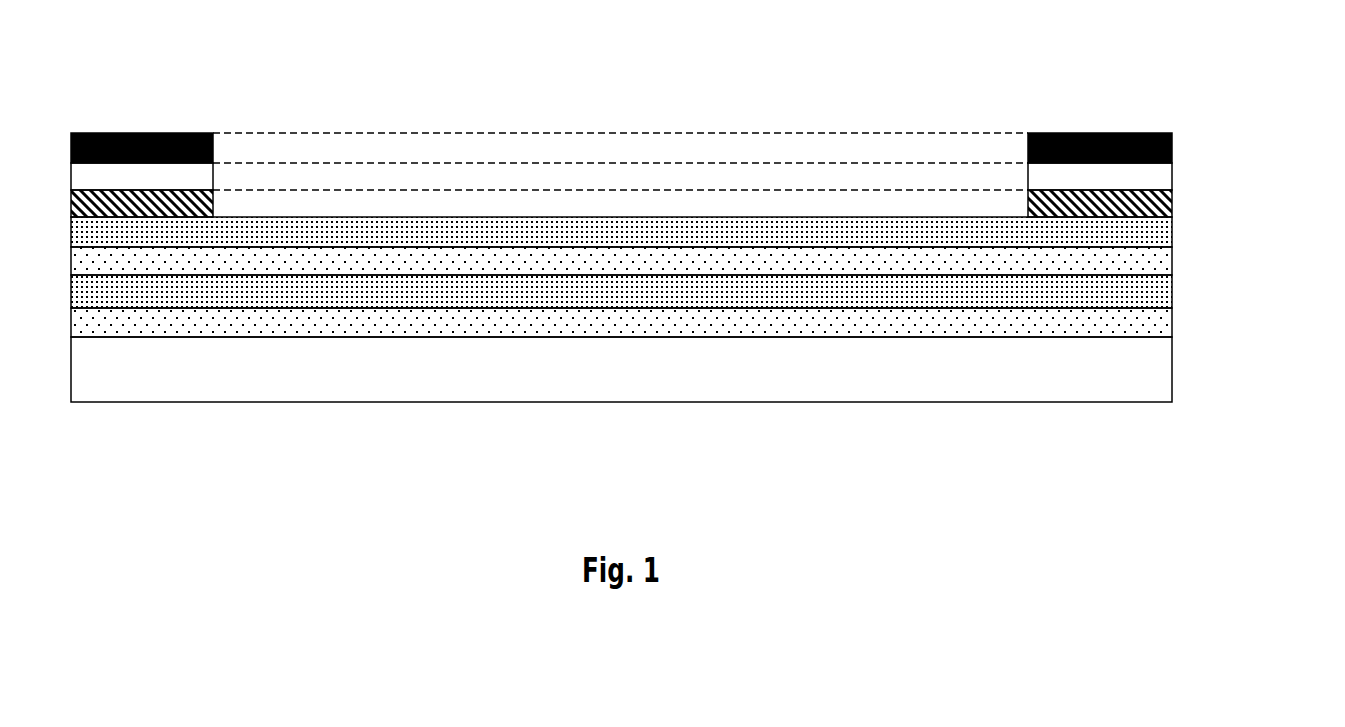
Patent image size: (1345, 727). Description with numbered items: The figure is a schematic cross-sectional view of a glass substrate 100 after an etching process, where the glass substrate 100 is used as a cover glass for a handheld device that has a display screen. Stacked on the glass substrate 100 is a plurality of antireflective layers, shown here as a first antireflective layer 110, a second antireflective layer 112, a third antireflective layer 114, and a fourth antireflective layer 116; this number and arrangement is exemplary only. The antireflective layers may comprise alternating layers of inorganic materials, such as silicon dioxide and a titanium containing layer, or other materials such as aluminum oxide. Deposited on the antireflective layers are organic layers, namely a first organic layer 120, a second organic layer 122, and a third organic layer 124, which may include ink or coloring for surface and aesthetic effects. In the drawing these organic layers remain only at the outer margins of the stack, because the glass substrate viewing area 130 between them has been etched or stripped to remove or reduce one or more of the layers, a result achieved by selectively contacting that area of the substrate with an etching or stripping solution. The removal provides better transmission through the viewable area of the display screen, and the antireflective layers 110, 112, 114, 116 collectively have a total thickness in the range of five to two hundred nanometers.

The glass substrate 100 is at (1172, 380).
The first antireflective layer 110 is at (1172, 320).
The second antireflective layer 112 is at (1172, 288).
The third antireflective layer 114 is at (1172, 252).
The fourth antireflective layer 116 is at (1172, 222).
The first organic layer 120 is at (1172, 197).
The second organic layer 122 is at (1158, 179).
The third organic layer 124 is at (1172, 153).
The glass substrate viewing area 130 is at (590, 129).